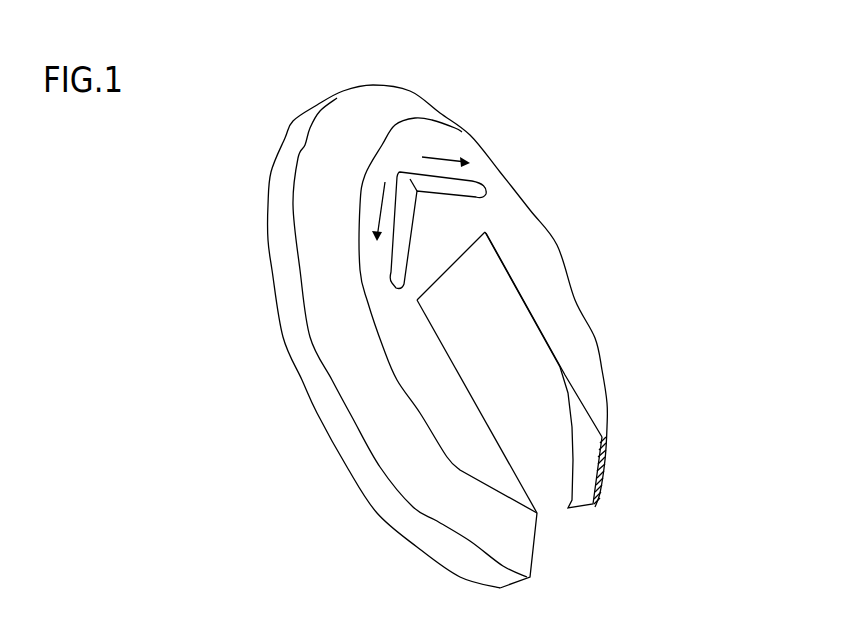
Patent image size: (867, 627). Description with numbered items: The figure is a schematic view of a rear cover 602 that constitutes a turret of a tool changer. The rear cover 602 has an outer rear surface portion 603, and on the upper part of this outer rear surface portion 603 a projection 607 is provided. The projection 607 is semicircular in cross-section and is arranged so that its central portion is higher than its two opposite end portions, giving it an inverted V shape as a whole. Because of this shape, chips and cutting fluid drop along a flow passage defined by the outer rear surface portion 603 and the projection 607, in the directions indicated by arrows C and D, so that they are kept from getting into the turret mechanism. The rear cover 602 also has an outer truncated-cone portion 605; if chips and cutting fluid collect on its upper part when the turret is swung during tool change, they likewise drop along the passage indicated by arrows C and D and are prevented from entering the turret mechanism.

The rear cover 602 is at (494, 336).
The outer rear surface portion 603 is at (580, 347).
The outer truncated-cone portion 605 is at (370, 385).
The projection 607 is at (474, 180).
The arrow C is at (382, 204).
The arrow D is at (447, 155).